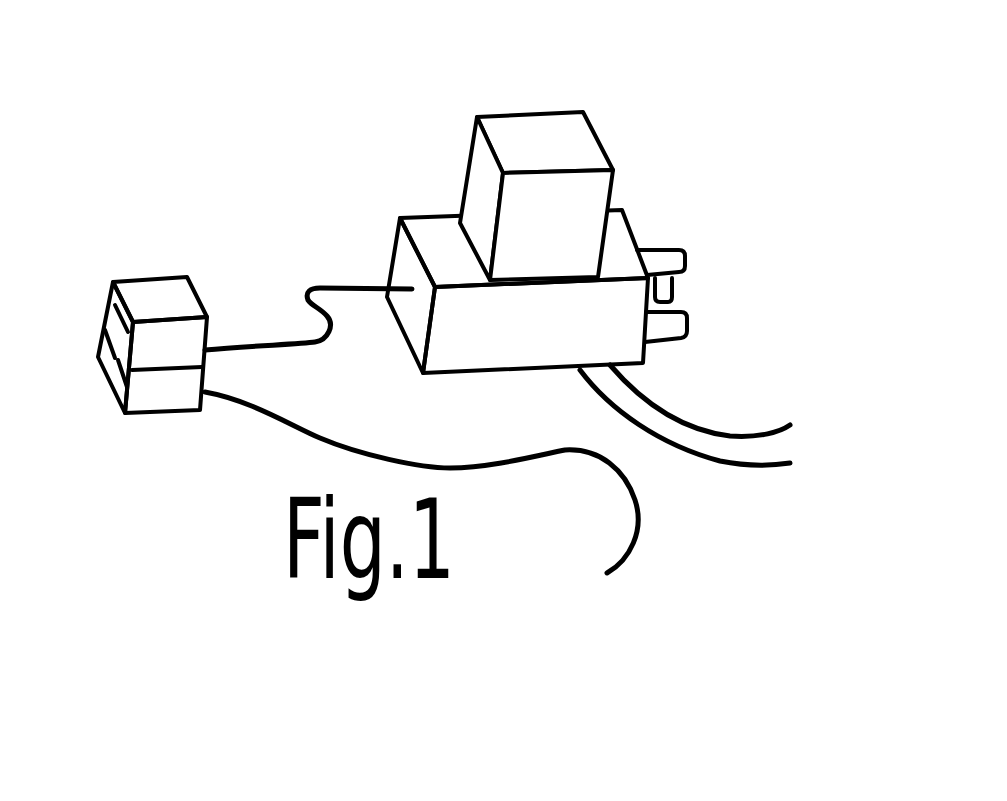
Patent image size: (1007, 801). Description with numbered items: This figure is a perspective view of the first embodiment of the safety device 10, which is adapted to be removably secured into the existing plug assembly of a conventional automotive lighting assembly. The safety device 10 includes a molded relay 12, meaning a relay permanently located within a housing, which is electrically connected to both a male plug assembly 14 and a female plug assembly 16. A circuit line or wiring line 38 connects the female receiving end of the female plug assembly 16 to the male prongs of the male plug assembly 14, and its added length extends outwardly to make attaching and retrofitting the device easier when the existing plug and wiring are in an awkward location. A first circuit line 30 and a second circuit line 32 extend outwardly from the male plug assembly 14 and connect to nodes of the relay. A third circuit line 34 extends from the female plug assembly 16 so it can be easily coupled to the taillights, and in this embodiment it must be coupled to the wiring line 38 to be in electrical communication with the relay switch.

The safety device 10 is at (425, 195).
The molded relay 12 is at (573, 137).
The male plug assembly 14 is at (667, 257).
The female plug assembly 16 is at (170, 393).
The first circuit line 30 is at (687, 423).
The second circuit line 32 is at (750, 468).
The third circuit line 34 is at (638, 518).
The circuit line 38 is at (330, 283).